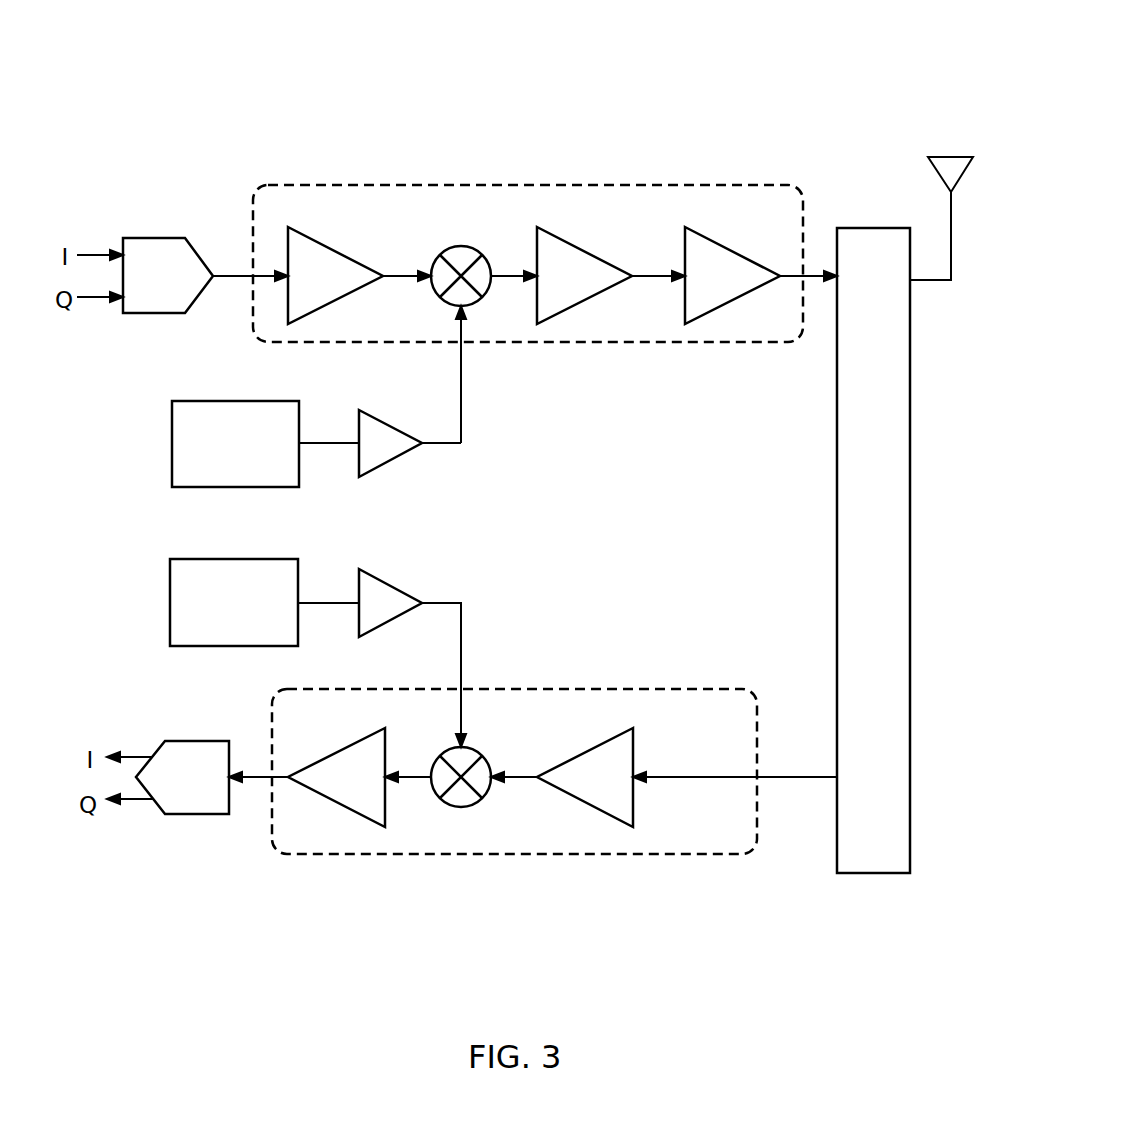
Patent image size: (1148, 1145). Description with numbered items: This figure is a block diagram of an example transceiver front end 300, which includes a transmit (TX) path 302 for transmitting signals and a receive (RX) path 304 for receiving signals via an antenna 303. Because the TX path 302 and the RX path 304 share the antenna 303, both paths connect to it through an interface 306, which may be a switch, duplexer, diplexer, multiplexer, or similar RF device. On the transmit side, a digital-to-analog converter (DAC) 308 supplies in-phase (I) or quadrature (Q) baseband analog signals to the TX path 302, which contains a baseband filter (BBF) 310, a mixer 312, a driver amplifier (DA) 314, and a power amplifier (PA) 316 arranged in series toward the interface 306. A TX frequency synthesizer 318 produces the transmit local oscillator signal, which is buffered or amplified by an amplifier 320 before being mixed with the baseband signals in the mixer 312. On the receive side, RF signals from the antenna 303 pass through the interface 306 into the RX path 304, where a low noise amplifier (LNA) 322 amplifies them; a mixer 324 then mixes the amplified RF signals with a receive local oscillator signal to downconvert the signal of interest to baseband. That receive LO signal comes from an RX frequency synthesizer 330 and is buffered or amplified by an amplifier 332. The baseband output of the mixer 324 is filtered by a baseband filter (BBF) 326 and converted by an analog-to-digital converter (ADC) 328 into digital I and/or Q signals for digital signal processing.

The transceiver front end 300 is at (848, 72).
The transmit (TX) path 302 is at (718, 186).
The antenna 303 is at (950, 156).
The receive (RX) path 304 is at (687, 689).
The interface 306 is at (865, 228).
The digital-to-analog converter (DAC) 308 is at (184, 238).
The baseband filter (BBF) 310 is at (342, 251).
The mixer 312 is at (463, 247).
The driver amplifier (DA) 314 is at (590, 249).
The power amplifier (PA) 316 is at (723, 241).
The TX frequency synthesizer 318 is at (263, 401).
The amplifier 320 is at (377, 419).
The low noise amplifier (LNA) 322 is at (635, 753).
The mixer 324 is at (483, 757).
The baseband filter (BBF) 326 is at (355, 740).
The analog-to-digital converter (ADC) 328 is at (193, 741).
The RX frequency synthesizer 330 is at (263, 559).
The amplifier 332 is at (377, 579).